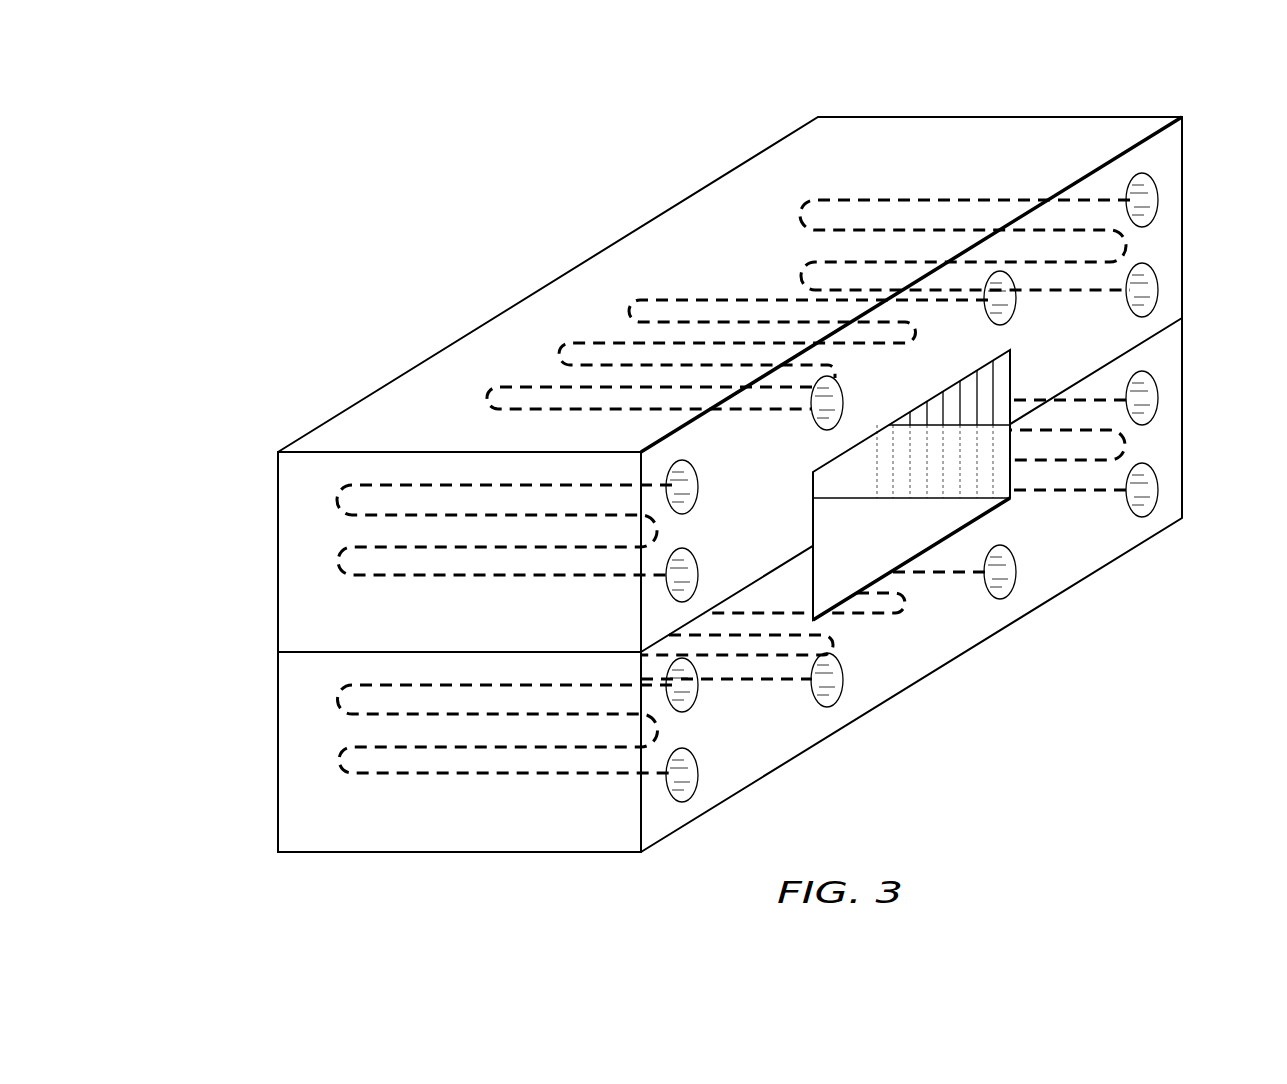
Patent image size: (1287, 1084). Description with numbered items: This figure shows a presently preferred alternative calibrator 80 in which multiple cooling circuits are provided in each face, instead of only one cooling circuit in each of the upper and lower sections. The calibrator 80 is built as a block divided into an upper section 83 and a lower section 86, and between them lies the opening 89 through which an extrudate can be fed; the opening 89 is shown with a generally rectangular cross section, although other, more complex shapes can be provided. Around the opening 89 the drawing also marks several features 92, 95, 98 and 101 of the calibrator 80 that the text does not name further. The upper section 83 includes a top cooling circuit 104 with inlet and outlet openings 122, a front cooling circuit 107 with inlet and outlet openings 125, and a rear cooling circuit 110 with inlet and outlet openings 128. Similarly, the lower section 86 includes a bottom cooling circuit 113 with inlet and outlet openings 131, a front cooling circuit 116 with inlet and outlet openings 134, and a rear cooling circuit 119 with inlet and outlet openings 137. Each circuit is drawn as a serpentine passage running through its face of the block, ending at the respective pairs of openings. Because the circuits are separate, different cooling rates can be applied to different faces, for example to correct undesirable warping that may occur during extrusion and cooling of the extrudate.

The calibrator 80 is at (523, 327).
The upper section 83 is at (293, 551).
The lower section 86 is at (295, 805).
The opening 89 is at (895, 490).
The plate edge 92 is at (836, 466).
The plate lower edge 95 is at (923, 532).
The plate lower face 98 is at (817, 580).
The insert plate 101 is at (1000, 374).
The top cooling circuit 104 is at (706, 300).
The front cooling circuit 107 is at (420, 578).
The rear cooling circuit 110 is at (975, 195).
The bottom cooling circuit 113 is at (900, 607).
The front cooling circuit 116 is at (445, 775).
The rear cooling circuit 119 is at (1062, 492).
The inlet and outlet openings 122 is at (1004, 323).
The inlet and outlet openings 125 is at (695, 497).
The inlet and outlet openings 128 is at (1155, 208).
The inlet and outlet openings 131 is at (1008, 578).
The inlet and outlet openings 134 is at (695, 695).
The inlet and outlet openings 137 is at (1155, 405).